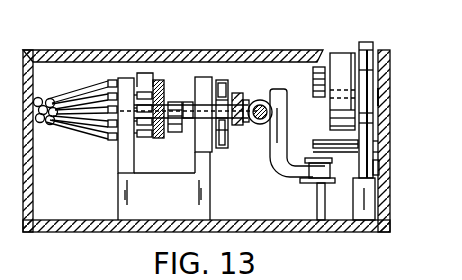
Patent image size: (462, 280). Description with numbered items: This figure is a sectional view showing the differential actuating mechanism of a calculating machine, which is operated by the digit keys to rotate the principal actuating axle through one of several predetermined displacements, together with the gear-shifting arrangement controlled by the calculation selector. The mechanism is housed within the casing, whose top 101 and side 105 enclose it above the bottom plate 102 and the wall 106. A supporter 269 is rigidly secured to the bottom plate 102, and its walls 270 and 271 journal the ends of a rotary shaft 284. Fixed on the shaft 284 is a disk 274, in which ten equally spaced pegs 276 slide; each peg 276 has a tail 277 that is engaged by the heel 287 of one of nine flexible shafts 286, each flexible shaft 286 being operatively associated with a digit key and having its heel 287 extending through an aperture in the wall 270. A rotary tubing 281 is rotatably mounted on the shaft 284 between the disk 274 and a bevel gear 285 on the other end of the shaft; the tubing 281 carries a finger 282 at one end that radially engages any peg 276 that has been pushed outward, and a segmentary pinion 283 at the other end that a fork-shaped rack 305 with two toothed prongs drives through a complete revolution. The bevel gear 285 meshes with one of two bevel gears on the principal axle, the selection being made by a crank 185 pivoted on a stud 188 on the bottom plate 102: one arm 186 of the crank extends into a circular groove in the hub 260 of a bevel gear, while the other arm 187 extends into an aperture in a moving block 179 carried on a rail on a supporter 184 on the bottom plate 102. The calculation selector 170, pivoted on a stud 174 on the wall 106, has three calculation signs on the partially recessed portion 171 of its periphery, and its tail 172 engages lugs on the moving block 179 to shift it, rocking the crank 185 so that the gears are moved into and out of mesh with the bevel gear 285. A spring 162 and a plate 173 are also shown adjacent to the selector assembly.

The housing top wall 101 is at (52, 50).
The bottom plate 102 is at (270, 231).
The housing side wall 105 is at (28, 193).
The wall 106 is at (389, 62).
The spring 162 is at (314, 92).
The calculation selector 170 is at (369, 43).
The partially recessed portion 171 is at (344, 78).
The tail 172 is at (381, 141).
The lever plate 173 is at (335, 143).
The stud 174 is at (379, 97).
The moving block 179 is at (381, 167).
The supporter 184 is at (370, 205).
The crank 185 is at (287, 170).
The arm 186 is at (283, 121).
The arm 187 is at (347, 168).
The stud 188 is at (320, 198).
The hub 260 is at (264, 98).
The supporter 269 is at (180, 213).
The wall 270 is at (125, 158).
The wall 271 is at (202, 164).
The disk 274 is at (157, 78).
The pegs 276 is at (150, 77).
The tail 277 is at (143, 83).
The rotary tubing 281 is at (176, 104).
The finger 282 is at (173, 125).
The segmentary pinion 283 is at (229, 124).
The rotary shaft 284 is at (235, 68).
The bevel gear 285 is at (245, 100).
The flexible shafts 286 is at (57, 91).
The heel 287 is at (116, 88).
The fork-shaped rack 305 is at (219, 80).